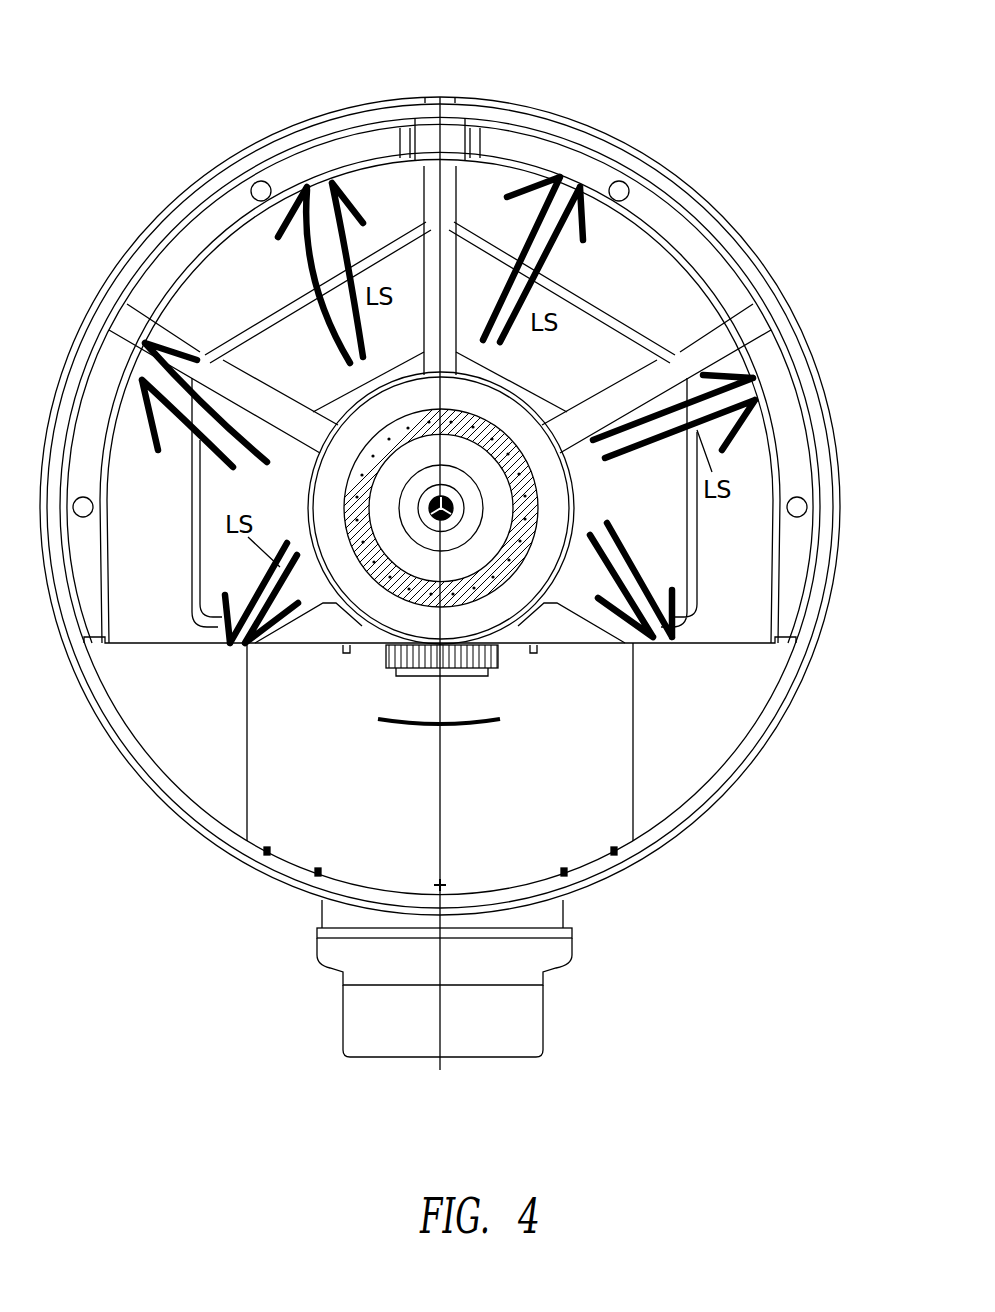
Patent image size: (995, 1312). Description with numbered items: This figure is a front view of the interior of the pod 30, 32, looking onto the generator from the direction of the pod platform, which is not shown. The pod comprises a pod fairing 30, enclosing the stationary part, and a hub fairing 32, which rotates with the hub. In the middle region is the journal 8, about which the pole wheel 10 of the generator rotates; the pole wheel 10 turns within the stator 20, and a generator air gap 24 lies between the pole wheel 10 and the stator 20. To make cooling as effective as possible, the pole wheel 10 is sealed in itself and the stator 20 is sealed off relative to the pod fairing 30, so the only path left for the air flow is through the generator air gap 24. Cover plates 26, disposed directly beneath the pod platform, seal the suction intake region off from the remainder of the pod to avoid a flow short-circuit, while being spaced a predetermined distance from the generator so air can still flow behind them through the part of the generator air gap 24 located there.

The pod fairing 30 is at (310, 118).
The hub fairing 32 is at (440, 505).
The generator air gap 24 is at (650, 215).
The stator 20 is at (698, 253).
The pole wheel 10 is at (752, 405).
The journal 8 is at (507, 432).
The cover plates 26 is at (200, 733).